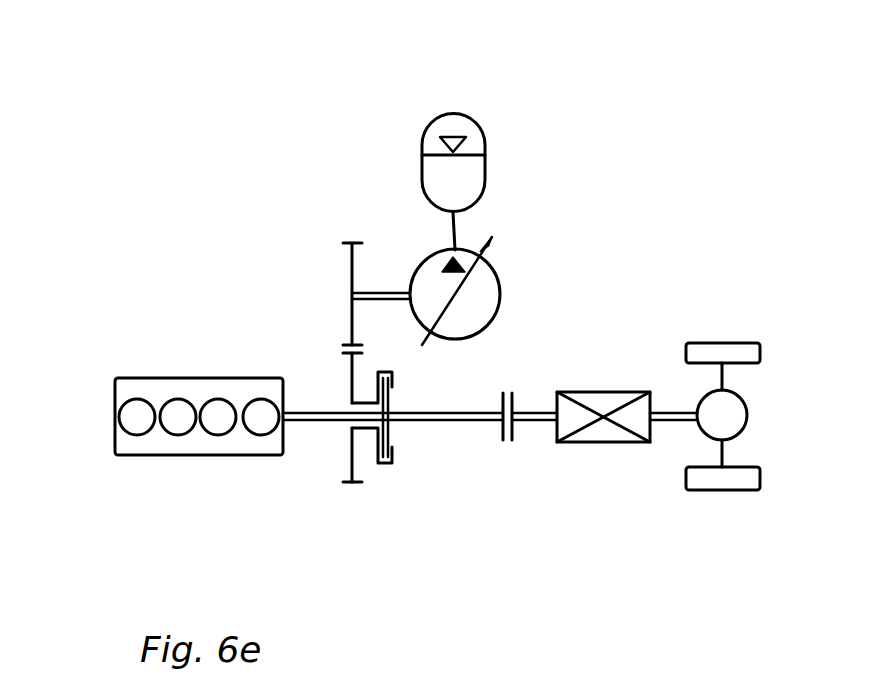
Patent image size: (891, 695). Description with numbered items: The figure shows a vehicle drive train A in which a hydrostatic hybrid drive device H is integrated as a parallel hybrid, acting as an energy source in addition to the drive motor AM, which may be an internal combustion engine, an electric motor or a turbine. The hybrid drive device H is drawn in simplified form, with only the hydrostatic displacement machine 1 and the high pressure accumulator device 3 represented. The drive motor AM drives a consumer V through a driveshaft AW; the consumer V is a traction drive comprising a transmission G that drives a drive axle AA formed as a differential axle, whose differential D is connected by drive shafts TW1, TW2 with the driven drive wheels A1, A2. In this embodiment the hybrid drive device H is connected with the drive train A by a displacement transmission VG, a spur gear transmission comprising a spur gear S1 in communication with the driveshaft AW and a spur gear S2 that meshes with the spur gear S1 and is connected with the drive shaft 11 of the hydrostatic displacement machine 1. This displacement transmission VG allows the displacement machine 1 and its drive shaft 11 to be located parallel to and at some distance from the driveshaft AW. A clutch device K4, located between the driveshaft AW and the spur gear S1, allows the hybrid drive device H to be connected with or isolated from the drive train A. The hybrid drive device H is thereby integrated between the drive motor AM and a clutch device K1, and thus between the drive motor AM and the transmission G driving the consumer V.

The drive train A is at (100, 257).
The drive motor AM is at (153, 378).
The driveshaft AW is at (318, 423).
The spur gear S2 is at (352, 243).
The drive shaft 11 is at (385, 282).
The hydrostatic displacement machine 1 is at (477, 283).
The high pressure accumulator device 3 is at (483, 173).
The hydrostatic hybrid drive device H is at (492, 125).
The clutch device K4 is at (398, 377).
The spur gear S1 is at (355, 484).
The displacement transmission VG is at (352, 495).
The clutch device K1 is at (505, 450).
The transmission G is at (598, 435).
The consumer V is at (720, 285).
The drive axle AA is at (747, 405).
The differential D is at (727, 417).
The drive shaft TW1 is at (718, 377).
The drive shaft TW2 is at (713, 450).
The drive wheel A1 is at (735, 350).
The drive wheel A2 is at (738, 477).